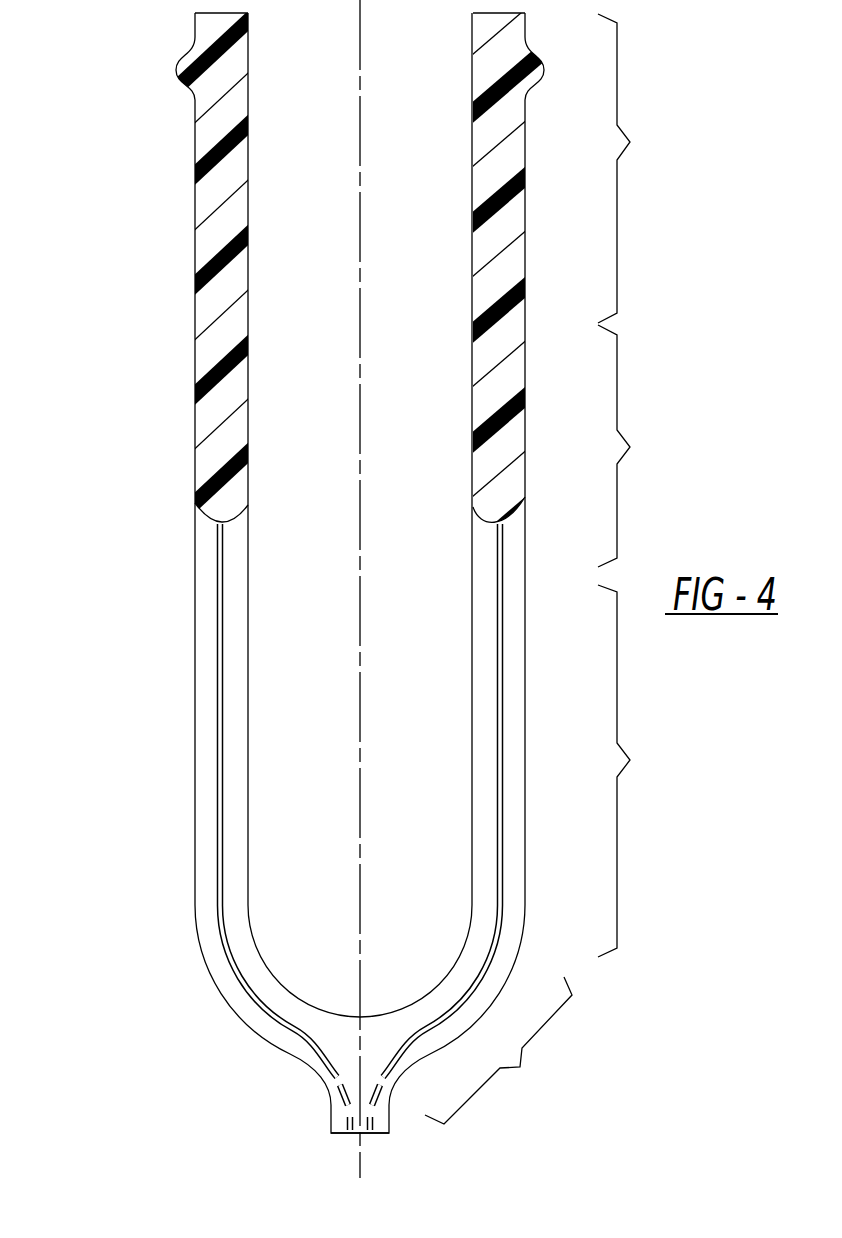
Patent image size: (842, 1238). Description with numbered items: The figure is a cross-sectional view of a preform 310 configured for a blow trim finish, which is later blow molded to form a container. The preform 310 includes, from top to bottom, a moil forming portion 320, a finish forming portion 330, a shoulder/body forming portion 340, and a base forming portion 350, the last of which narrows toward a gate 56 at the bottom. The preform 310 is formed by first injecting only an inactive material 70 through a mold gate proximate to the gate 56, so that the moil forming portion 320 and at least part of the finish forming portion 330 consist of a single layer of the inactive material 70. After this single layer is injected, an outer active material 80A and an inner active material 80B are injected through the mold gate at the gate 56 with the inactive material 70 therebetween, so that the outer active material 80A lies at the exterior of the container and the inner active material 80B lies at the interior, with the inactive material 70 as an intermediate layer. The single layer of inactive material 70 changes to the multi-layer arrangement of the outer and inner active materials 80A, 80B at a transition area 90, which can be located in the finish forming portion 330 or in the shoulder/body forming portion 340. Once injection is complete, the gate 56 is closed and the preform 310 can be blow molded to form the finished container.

The preform 310 is at (100, 175).
The moil forming portion 320 is at (637, 168).
The finish forming portion 330 is at (637, 446).
The shoulder/body forming portion 340 is at (635, 771).
The base forming portion 350 is at (498, 1050).
The transition area 90 is at (218, 523).
The inactive material 70 is at (218, 738).
The outer active material 80A is at (194, 808).
The inner active material 80B is at (248, 863).
The gate 56 is at (380, 1133).